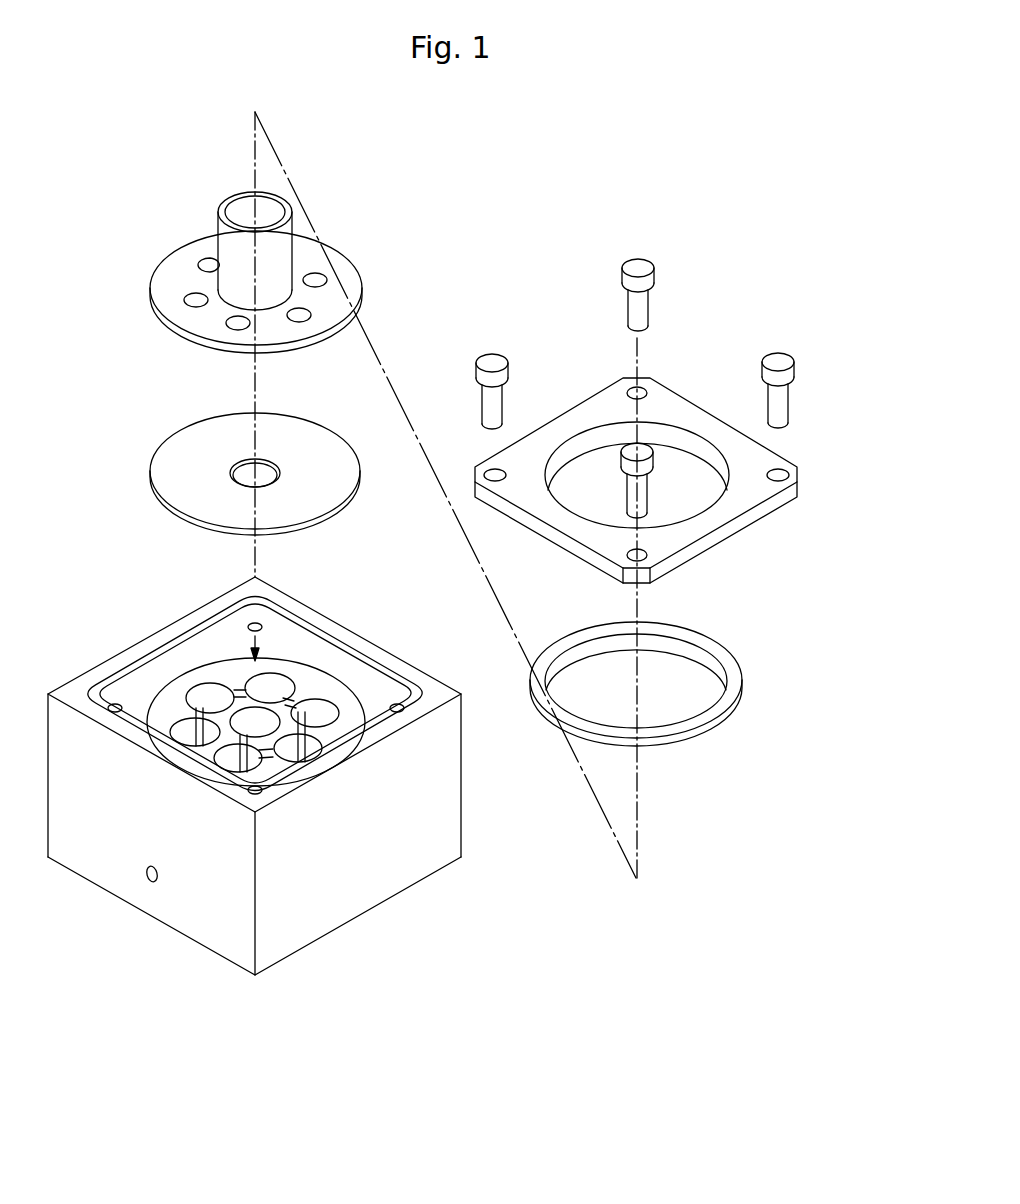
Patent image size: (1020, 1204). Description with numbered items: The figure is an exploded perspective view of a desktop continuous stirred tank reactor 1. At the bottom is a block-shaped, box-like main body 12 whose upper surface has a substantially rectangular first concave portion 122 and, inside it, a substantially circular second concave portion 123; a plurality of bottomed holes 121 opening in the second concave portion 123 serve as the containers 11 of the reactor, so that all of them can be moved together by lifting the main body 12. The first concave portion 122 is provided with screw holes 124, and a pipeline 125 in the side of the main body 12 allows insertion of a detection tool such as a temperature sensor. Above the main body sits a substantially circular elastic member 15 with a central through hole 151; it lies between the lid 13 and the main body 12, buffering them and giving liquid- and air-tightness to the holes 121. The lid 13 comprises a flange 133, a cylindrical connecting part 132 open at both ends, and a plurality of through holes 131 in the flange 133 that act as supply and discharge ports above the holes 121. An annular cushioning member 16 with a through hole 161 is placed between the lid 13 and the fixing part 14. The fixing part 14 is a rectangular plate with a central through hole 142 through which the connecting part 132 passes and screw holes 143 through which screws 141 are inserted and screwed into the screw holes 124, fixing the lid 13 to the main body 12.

The reactor 1 is at (847, 955).
The containers 11 is at (262, 677).
The holes 121 is at (250, 731).
The main body 12 is at (210, 868).
The first concave portion 122 is at (323, 645).
The second concave portion 123 is at (350, 687).
The screw holes 124 is at (259, 623).
The pipeline 125 is at (156, 880).
The lid 13 is at (330, 247).
The through holes 131 is at (327, 279).
The cylindrical connecting part 132 is at (228, 282).
The flange 133 is at (207, 247).
The fixing part 14 is at (703, 525).
The screws 141 is at (652, 308).
The through hole 142 is at (607, 423).
The screw holes 143 is at (648, 386).
The elastic member 15 is at (303, 475).
The through hole 151 is at (267, 460).
The cushioning member 16 is at (733, 685).
The through hole 161 is at (707, 648).